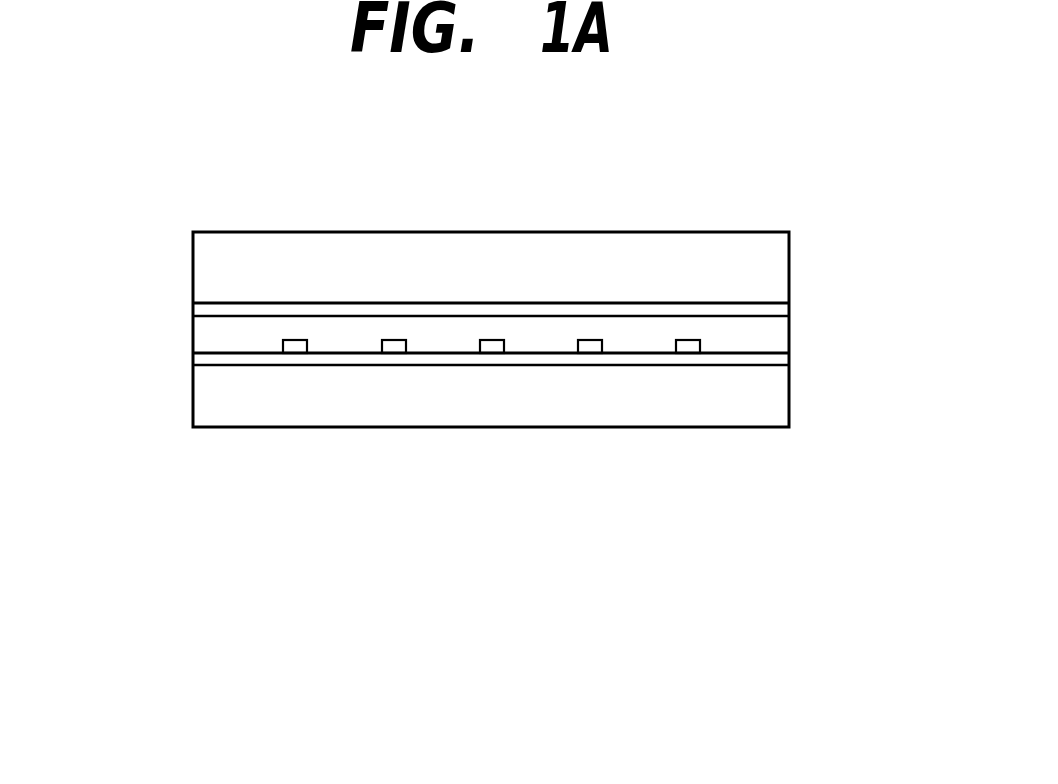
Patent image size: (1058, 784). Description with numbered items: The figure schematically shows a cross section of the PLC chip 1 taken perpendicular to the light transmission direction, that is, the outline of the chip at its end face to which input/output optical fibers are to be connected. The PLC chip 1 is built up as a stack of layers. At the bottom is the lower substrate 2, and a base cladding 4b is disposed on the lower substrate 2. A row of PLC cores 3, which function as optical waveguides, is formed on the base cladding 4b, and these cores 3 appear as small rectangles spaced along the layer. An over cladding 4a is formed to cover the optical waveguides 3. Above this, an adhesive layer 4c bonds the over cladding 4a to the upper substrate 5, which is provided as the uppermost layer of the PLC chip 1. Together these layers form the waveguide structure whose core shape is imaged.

The PLC chip 1 is at (663, 177).
The lower substrate 2 is at (713, 407).
The PLC cores 3 is at (295, 345).
The over cladding 4a is at (782, 333).
The base cladding 4b is at (199, 358).
The adhesive layer 4c is at (199, 310).
The upper substrate 5 is at (284, 248).